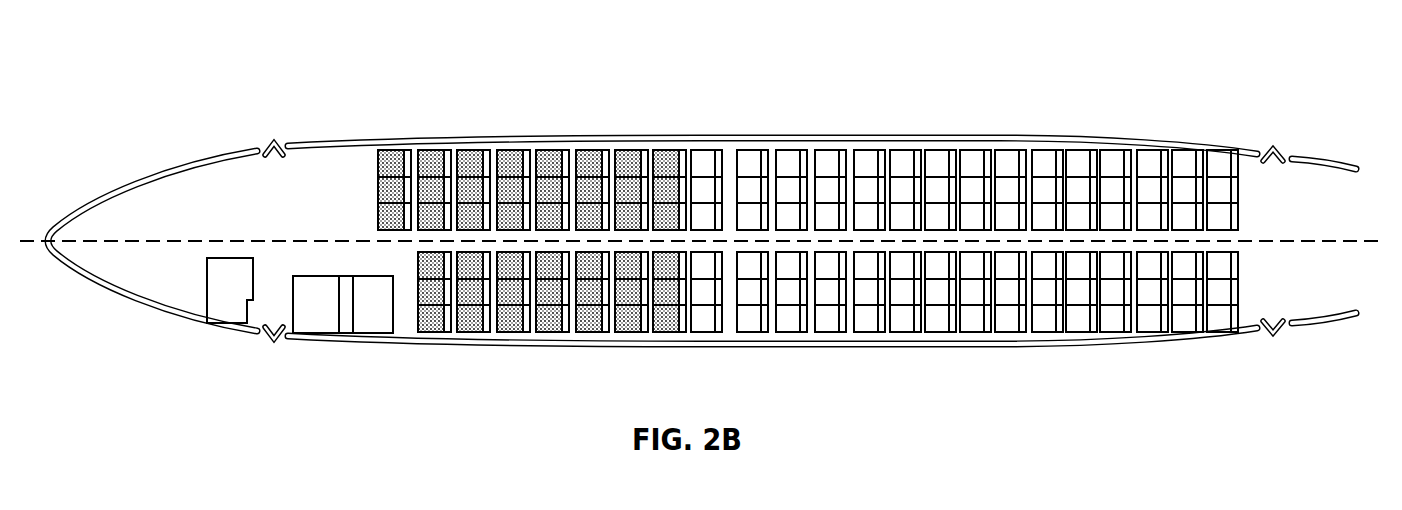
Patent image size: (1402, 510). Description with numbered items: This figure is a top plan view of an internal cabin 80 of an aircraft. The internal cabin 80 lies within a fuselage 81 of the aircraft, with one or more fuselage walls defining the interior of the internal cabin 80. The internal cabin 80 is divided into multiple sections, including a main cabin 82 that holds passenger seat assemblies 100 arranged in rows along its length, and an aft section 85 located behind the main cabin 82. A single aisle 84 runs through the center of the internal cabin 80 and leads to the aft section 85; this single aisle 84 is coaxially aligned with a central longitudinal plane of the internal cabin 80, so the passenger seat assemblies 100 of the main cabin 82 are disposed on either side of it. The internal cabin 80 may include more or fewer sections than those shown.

The internal cabin 80 is at (291, 82).
The fuselage 81 is at (497, 140).
The main cabin 82 is at (433, 163).
The passenger seat assemblies 100 is at (706, 170).
The single aisle 84 is at (830, 233).
The aft section 85 is at (1258, 175).